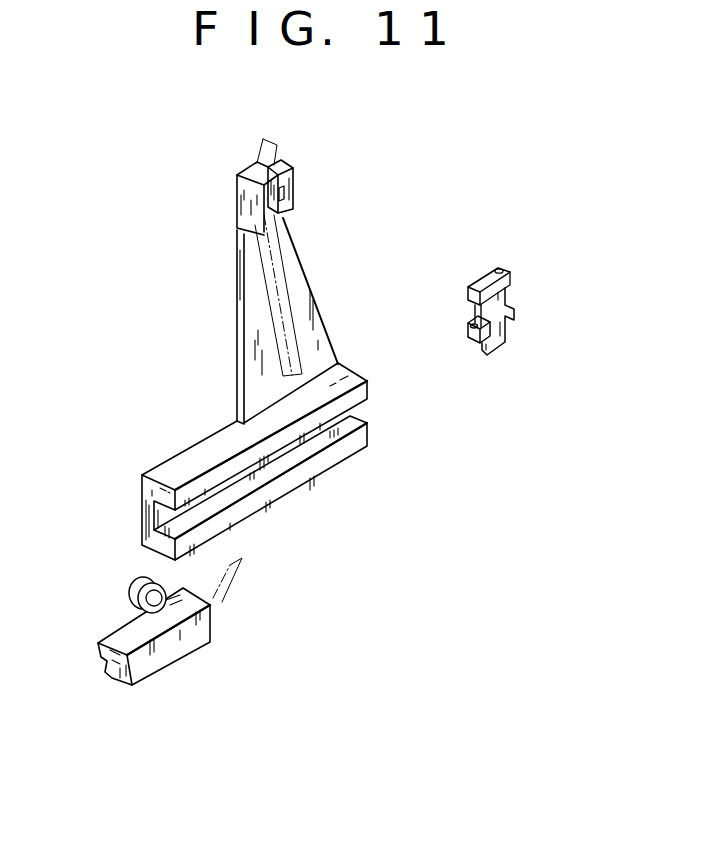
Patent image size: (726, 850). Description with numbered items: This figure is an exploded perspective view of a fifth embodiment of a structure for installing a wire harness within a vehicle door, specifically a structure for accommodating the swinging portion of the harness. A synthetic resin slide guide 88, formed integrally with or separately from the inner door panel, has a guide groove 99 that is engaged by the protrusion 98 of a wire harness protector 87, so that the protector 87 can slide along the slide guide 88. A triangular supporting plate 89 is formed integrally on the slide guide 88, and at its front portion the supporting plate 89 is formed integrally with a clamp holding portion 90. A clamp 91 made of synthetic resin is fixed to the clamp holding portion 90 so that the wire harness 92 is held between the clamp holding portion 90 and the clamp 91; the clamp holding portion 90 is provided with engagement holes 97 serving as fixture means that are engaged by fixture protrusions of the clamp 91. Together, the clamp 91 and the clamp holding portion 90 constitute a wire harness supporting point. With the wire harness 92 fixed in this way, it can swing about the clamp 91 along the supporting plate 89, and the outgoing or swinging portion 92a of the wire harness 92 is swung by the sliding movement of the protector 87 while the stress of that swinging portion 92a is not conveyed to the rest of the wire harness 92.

The wire harness protector 87 is at (172, 662).
The slide guide 88 is at (278, 487).
The supporting plate 89 is at (318, 318).
The clamp holding portion 90 is at (304, 196).
The clamp 91 is at (526, 295).
The wire harness 92 is at (262, 142).
The swinging portion 92a is at (282, 358).
The engagement holes 97 is at (285, 200).
The protrusion 98 is at (130, 592).
The guide groove 99 is at (328, 431).